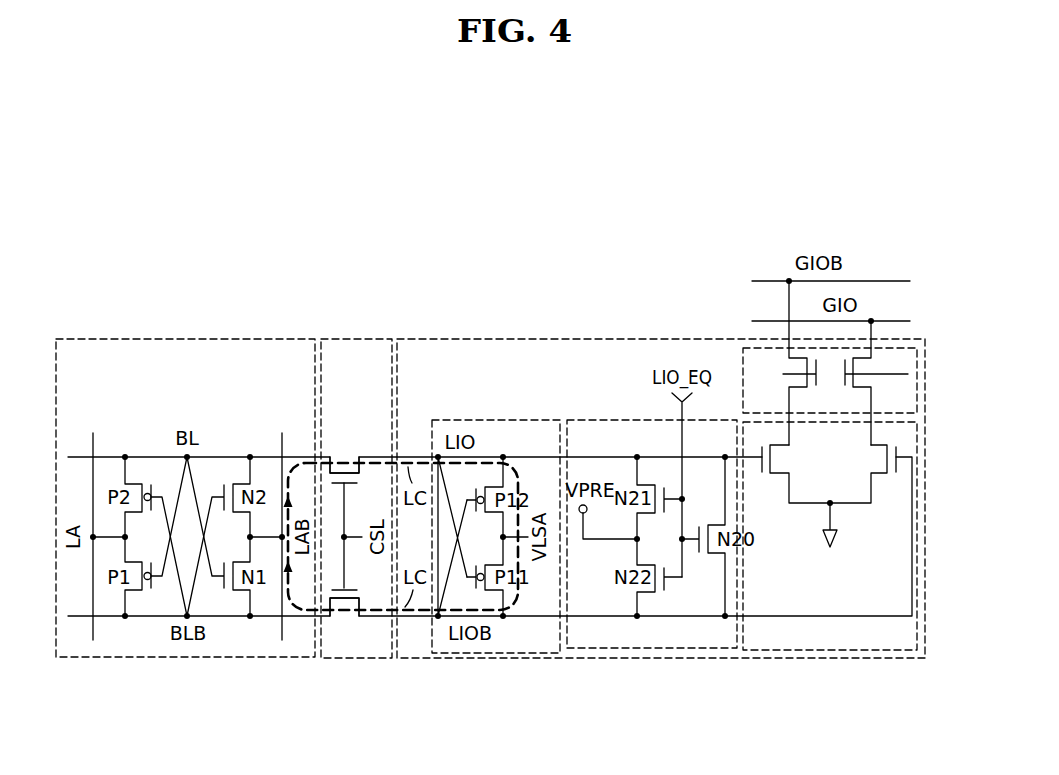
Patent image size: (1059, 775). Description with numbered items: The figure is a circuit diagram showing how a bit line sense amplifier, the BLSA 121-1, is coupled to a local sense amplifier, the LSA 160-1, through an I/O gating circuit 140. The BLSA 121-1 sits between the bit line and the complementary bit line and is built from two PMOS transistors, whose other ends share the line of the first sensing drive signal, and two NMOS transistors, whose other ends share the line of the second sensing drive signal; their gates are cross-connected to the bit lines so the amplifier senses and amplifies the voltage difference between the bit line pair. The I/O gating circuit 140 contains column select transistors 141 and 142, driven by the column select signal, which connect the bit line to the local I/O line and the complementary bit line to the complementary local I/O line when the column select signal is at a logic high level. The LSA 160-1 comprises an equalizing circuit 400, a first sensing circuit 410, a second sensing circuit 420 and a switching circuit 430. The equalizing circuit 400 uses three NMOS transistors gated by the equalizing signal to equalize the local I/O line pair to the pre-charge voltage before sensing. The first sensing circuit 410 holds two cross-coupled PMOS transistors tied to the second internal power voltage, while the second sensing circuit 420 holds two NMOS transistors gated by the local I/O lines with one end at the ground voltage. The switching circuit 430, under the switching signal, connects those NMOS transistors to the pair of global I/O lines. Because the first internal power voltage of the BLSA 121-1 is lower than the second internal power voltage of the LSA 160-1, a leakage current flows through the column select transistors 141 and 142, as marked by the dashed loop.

The BLSA 121-1 is at (236, 340).
The I/O gating circuit 140 is at (342, 340).
The column select transistor 141 is at (344, 457).
The column select transistor 142 is at (344, 615).
The LSA 160-1 is at (592, 340).
The first sensing circuit 410 is at (512, 420).
The equalizing circuit 400 is at (600, 420).
The second sensing circuit 420 is at (917, 538).
The switching circuit 430 is at (917, 382).